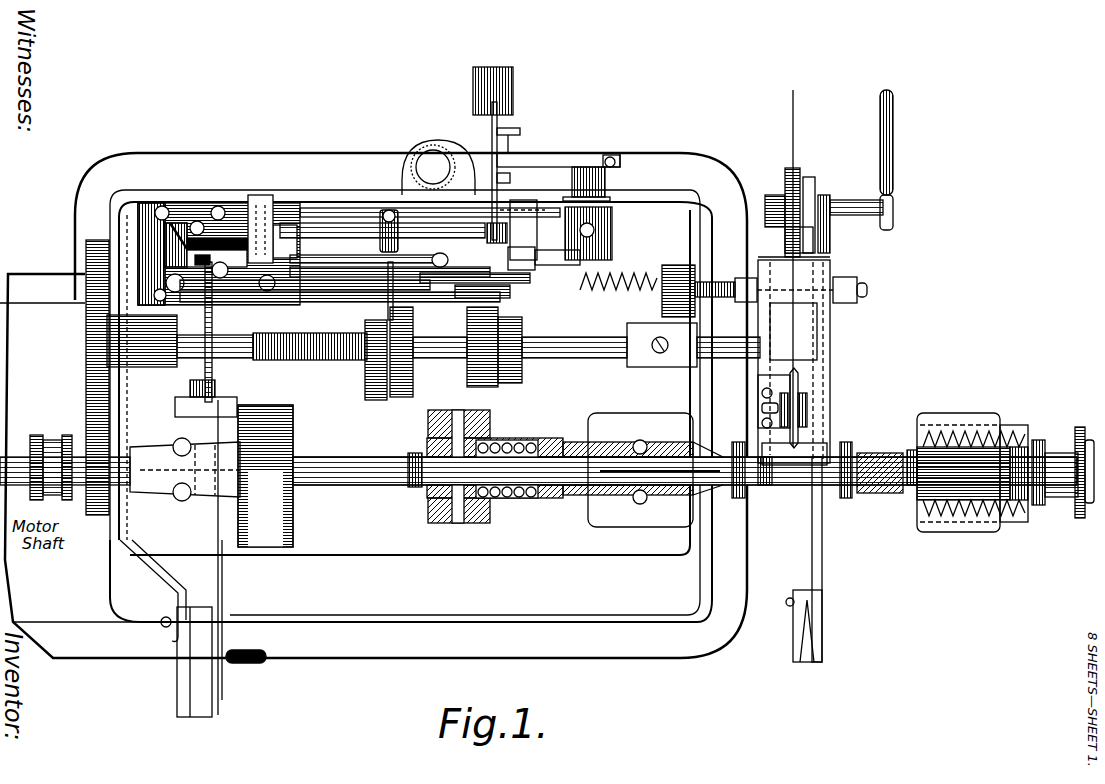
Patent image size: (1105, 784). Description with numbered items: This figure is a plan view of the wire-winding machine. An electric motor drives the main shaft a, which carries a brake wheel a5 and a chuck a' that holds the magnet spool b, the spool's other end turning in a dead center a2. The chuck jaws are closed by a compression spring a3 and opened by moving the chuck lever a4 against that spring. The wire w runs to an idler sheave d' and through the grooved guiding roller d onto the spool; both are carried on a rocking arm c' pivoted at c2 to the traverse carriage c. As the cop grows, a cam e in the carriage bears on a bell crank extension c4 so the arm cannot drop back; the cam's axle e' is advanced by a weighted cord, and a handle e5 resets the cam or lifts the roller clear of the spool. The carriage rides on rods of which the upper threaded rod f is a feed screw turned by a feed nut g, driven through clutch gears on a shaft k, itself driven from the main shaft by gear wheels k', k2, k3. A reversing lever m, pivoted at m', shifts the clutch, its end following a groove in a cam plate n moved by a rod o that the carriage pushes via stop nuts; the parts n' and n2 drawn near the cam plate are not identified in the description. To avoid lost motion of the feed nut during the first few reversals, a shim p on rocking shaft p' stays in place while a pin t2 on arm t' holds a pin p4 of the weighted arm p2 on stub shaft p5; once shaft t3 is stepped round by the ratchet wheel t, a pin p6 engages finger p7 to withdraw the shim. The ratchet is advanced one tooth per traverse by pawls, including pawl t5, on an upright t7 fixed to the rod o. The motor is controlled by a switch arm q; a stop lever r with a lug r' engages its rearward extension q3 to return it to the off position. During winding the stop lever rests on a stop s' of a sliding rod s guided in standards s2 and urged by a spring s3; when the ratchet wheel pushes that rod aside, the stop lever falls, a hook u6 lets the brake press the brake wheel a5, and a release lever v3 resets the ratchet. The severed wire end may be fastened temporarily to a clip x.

The main shaft a is at (685, 483).
The chuck a' is at (749, 481).
The dead center a2 is at (850, 495).
The compression spring a3 is at (508, 500).
The chuck lever a4 is at (480, 432).
The brake wheel a5 is at (290, 527).
The magnet spool b is at (812, 478).
The traverse carriage c is at (806, 361).
The rocking arm c' is at (809, 401).
The pivot c2 is at (825, 342).
The bell crank extension c4 is at (813, 242).
The guiding roller d is at (791, 515).
The idler sheave d' is at (835, 397).
The cam e is at (794, 201).
The cam axle e' is at (843, 211).
The handle e5 is at (893, 160).
The feed screw rod f is at (330, 358).
The feed nut g is at (455, 385).
The shaft k is at (251, 311).
The gear wheel k' is at (65, 451).
The gear wheel k2 is at (112, 488).
The gear wheel k3 is at (86, 368).
The reversing lever m is at (425, 200).
The pivot m' is at (375, 218).
The cam plate n is at (249, 280).
The block n' is at (190, 254).
The rod n2 is at (272, 300).
The rod o is at (324, 285).
The shim p is at (340, 218).
The rocking shaft p' is at (382, 189).
The weighted arm p2 is at (497, 133).
The pin p4 is at (520, 152).
The stub shaft p5 is at (476, 227).
The pin p6 is at (552, 150).
The finger p7 is at (592, 150).
The switch arm q is at (220, 572).
The rearward extension q3 is at (292, 448).
The stop lever r is at (224, 315).
The lug r' is at (285, 434).
The stop rod s is at (327, 223).
The stop s' is at (182, 232).
The supporting standards s2 is at (263, 194).
The spring s3 is at (612, 272).
The ratchet wheel t is at (500, 270).
The arm t' is at (586, 163).
The pin t2 is at (520, 165).
The shaft t3 is at (611, 148).
The pawl t5 is at (585, 297).
The upright t7 is at (518, 292).
The hook u6 is at (175, 402).
The release lever v3 is at (107, 318).
The wire w is at (870, 372).
The clip x is at (822, 630).